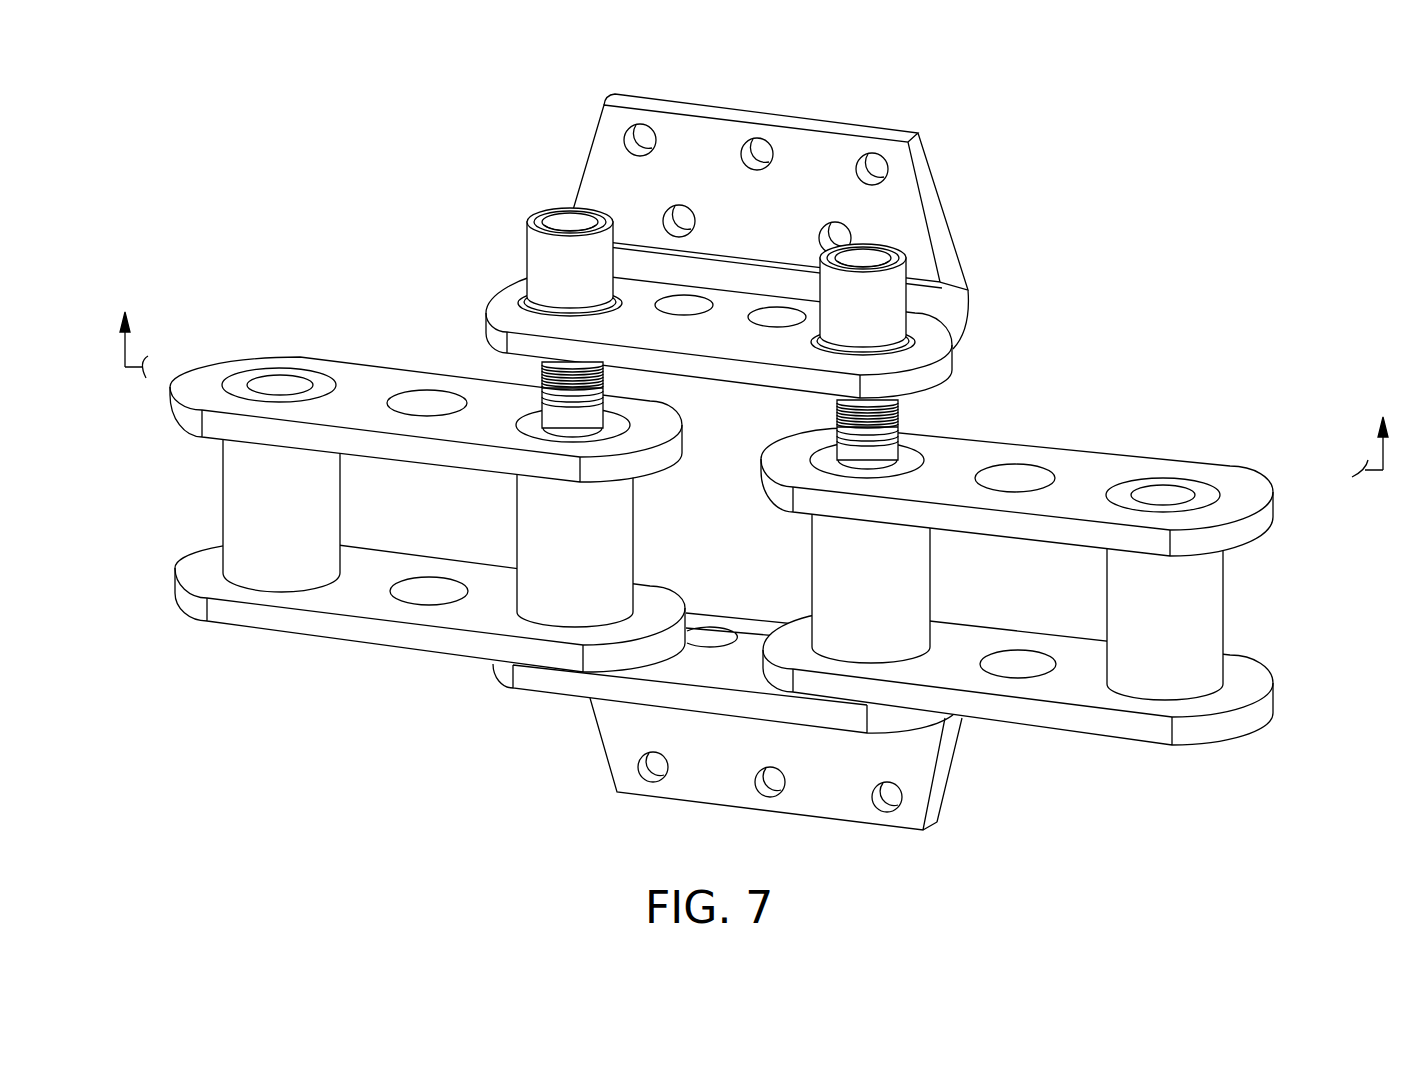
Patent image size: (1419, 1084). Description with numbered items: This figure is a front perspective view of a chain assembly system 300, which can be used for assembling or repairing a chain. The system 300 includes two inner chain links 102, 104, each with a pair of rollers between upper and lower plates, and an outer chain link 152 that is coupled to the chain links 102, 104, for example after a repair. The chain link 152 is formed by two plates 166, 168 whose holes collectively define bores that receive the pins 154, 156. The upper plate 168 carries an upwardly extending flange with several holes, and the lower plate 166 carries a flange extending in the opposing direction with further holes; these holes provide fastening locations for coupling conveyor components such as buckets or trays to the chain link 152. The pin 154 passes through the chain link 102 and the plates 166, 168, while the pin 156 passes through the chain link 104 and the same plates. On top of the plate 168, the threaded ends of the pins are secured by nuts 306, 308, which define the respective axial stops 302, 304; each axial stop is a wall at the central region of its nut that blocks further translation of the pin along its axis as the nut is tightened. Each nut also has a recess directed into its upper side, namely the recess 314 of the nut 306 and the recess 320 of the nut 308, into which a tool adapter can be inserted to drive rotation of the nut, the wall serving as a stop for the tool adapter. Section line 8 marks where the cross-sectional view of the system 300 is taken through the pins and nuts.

The chain assembly system 300 is at (752, 453).
The chain link 152 is at (858, 94).
The axial stop 302 is at (503, 229).
The recess 314 is at (565, 222).
The nut 306 is at (558, 273).
The axial stop 304 is at (948, 289).
The recess 320 is at (870, 260).
The nut 308 is at (893, 314).
The plate 168 is at (547, 345).
The plate 166 is at (620, 690).
The chain link 102 is at (301, 331).
The chain link 104 is at (1220, 446).
The pin 154 is at (558, 424).
The pin 156 is at (878, 449).
The line 8- 8 is at (757, 382).